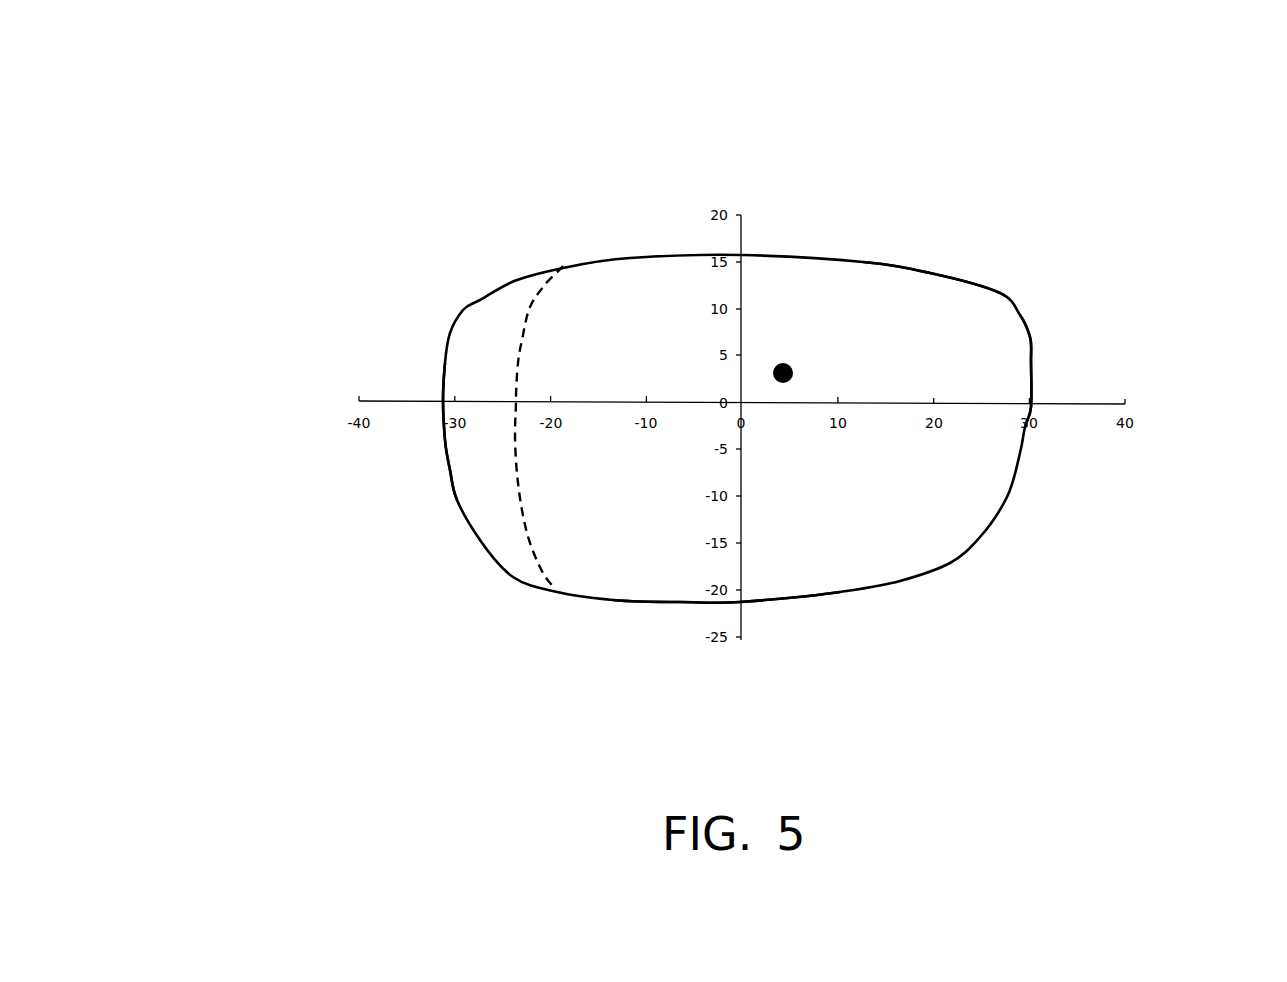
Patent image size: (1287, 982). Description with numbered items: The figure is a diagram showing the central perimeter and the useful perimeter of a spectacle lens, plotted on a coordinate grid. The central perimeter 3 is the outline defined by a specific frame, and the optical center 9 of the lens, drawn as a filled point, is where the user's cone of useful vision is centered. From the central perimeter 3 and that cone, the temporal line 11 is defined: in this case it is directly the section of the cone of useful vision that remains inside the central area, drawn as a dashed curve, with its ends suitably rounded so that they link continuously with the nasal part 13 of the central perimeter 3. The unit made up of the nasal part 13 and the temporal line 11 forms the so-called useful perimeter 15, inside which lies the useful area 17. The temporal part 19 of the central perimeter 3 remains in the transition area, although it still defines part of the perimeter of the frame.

The central perimeter 3 is at (772, 253).
The optical center 9 is at (782, 385).
The temporal line 11 is at (520, 348).
The nasal part 13 is at (1032, 358).
The useful perimeter 15 is at (653, 603).
The useful area 17 is at (852, 308).
The temporal part 19 is at (453, 482).